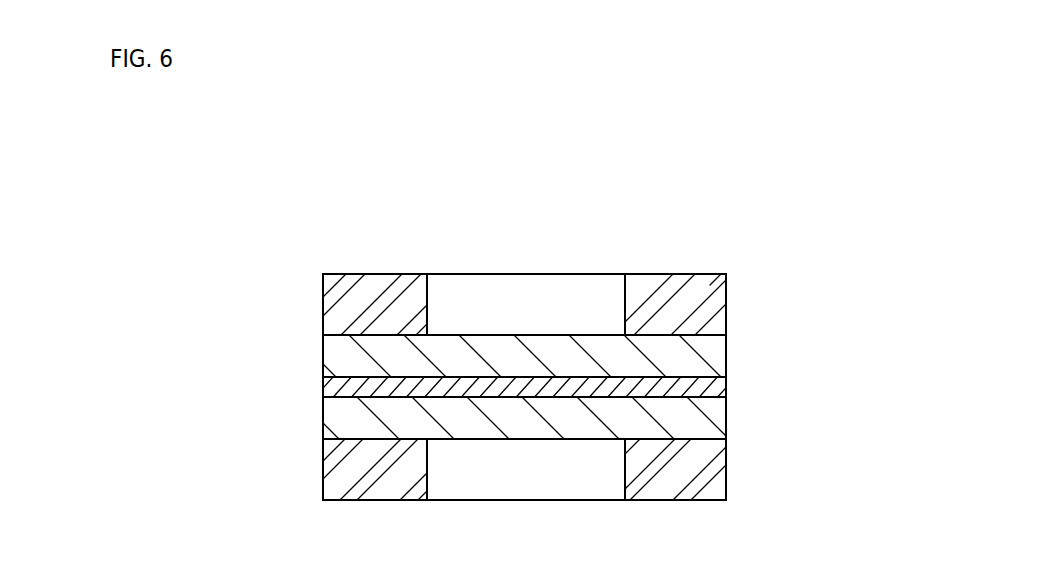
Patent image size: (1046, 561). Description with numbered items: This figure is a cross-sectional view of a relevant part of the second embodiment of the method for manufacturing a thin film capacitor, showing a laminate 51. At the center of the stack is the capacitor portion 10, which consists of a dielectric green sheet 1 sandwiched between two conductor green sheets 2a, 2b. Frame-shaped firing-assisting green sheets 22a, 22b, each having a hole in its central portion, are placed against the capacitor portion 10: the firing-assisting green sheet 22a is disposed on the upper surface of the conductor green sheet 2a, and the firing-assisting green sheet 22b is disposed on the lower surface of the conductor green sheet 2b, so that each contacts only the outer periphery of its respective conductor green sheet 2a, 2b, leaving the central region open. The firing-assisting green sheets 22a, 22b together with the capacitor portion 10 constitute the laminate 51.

The laminate 51 is at (617, 238).
The firing-assisting green sheet 22b is at (704, 285).
The capacitor portion 10 is at (890, 273).
The conductor green sheet 2b is at (716, 350).
The dielectric green sheet 1 is at (713, 386).
The conductor green sheet 2a is at (712, 420).
The firing-assisting green sheet 22a is at (715, 483).